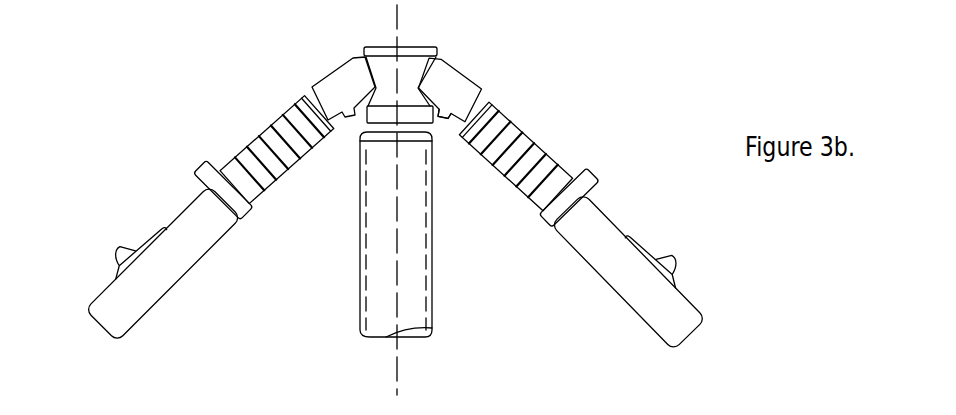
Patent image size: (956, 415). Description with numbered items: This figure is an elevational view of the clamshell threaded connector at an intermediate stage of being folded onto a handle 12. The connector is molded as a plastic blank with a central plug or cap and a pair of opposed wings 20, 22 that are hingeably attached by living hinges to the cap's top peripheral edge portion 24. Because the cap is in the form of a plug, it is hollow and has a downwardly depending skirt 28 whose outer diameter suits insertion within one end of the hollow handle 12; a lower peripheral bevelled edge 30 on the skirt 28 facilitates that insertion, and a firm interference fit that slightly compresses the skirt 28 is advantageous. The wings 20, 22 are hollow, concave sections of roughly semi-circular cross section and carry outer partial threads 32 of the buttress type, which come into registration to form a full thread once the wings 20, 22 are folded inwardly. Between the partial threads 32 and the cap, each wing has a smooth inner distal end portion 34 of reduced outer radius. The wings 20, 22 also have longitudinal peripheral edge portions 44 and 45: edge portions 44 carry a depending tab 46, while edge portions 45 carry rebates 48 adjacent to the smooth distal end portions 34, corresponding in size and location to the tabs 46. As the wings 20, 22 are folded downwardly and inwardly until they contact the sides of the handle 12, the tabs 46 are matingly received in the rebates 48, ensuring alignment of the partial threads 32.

The hollow handle 12 is at (360, 289).
The wing 20 is at (94, 293).
The wing 22 is at (703, 340).
The top peripheral edge portion 24 is at (376, 44).
The skirt 28 is at (410, 78).
The lower peripheral bevelled edge 30 is at (313, 86).
The outer partial threads 32 is at (232, 158).
The smooth inner distal end portions 34 is at (470, 69).
The longitudinal peripheral edge portion 44 is at (521, 202).
The longitudinal peripheral edge portion 45 is at (273, 196).
The depending tab 46 is at (452, 128).
The rebate 48 is at (390, 112).